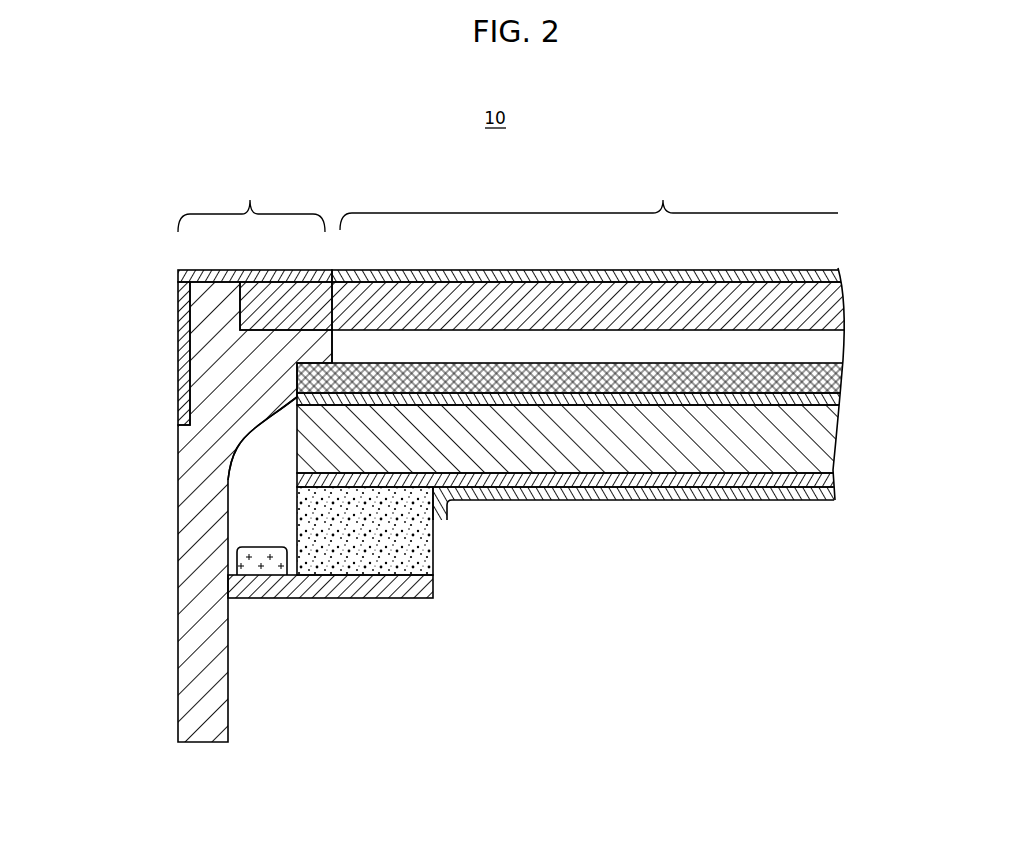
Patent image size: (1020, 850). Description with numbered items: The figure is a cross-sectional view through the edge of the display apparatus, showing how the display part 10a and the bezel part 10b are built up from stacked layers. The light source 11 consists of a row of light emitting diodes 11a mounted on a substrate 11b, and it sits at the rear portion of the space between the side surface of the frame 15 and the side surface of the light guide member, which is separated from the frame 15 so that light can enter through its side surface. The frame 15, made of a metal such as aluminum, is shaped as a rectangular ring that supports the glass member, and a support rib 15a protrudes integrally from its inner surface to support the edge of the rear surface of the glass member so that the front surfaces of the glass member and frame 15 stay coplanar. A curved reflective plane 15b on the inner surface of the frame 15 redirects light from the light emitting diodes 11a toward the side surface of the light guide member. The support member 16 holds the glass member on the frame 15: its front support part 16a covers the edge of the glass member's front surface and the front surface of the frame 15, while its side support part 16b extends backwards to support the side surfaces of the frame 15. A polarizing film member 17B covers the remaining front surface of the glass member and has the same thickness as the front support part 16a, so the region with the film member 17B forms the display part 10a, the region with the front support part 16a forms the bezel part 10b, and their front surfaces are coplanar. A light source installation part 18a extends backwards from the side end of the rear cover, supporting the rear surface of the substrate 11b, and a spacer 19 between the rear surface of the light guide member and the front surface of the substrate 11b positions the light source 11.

The display part 10a is at (589, 200).
The bezel part 10b is at (251, 201).
The light source 11 is at (255, 598).
The light emitting diodes 11a is at (242, 563).
The substrate 11b is at (240, 592).
The frame 15 is at (166, 483).
The support rib 15a is at (334, 350).
The reflective plane 15b is at (236, 455).
The support member 16 is at (204, 331).
The front support part 16a is at (222, 270).
The side support part 16b is at (153, 353).
The film member 17B is at (572, 271).
The light source installation part 18a is at (388, 609).
The spacer 19 is at (313, 520).